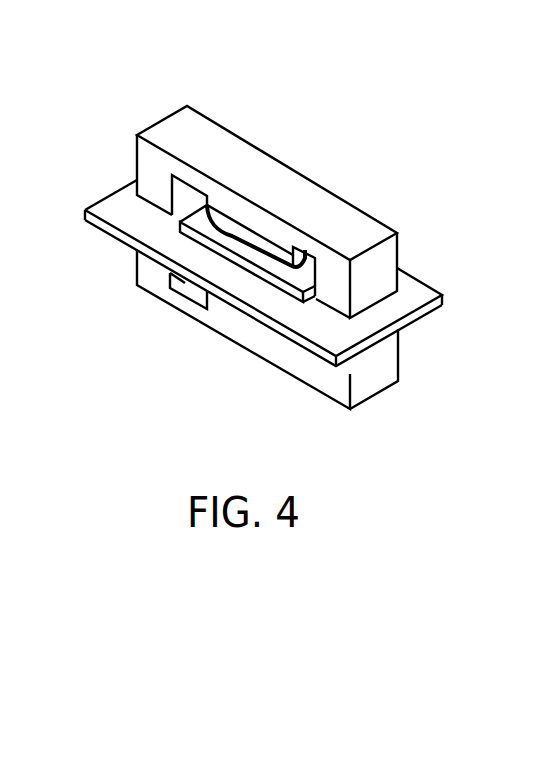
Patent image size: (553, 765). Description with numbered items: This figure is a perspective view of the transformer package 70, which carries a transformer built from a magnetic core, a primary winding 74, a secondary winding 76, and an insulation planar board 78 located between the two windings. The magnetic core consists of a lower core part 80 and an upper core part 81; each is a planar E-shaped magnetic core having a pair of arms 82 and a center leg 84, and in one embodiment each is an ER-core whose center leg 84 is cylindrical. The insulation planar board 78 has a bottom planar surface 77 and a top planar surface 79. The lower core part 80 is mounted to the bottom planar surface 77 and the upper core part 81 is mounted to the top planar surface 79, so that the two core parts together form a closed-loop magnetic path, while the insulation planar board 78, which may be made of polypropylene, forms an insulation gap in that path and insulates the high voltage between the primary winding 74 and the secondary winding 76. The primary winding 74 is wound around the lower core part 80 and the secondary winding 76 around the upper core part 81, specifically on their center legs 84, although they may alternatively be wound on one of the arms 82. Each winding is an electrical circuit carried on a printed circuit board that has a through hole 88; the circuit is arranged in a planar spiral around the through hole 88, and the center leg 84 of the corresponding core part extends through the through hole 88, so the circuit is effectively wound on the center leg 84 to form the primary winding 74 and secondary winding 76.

The transformer package 70 is at (425, 113).
The primary winding 74 is at (186, 284).
The secondary winding 76 is at (195, 214).
The bottom planar surface 77 is at (431, 313).
The insulation planar board 78 is at (405, 322).
The top planar surface 79 is at (415, 285).
The lower core part 80 is at (322, 385).
The upper core part 81 is at (172, 165).
The arms 82 is at (148, 188).
The center leg 84 is at (232, 222).
The through hole 88 is at (304, 258).